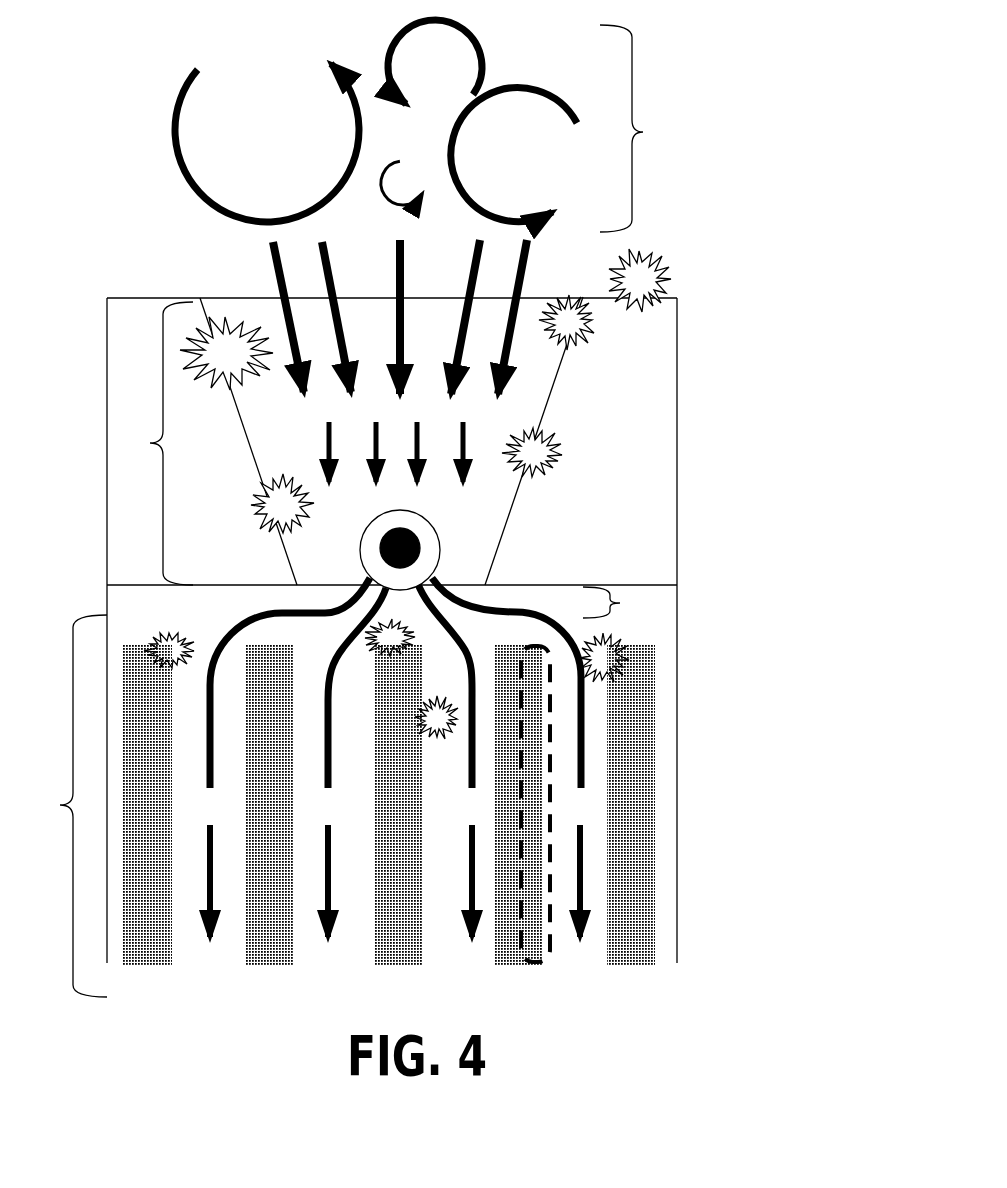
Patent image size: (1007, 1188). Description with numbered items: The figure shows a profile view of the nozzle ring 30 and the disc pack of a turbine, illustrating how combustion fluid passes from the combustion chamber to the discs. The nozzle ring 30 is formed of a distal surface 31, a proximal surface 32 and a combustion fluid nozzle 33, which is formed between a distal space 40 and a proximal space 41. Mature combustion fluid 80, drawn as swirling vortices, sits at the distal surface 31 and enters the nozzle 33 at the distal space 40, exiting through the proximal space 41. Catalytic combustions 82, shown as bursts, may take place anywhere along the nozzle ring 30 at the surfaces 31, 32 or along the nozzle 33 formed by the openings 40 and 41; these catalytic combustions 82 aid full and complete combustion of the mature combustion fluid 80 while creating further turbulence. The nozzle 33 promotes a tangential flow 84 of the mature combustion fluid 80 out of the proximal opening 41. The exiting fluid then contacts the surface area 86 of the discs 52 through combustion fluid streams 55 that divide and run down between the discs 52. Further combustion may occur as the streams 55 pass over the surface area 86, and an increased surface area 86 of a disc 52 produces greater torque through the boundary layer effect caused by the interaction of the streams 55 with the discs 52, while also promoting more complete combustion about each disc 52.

The nozzle ring 30 is at (100, 367).
The distal surface 31 is at (120, 291).
The proximal surface 32 is at (126, 582).
The combustion fluid nozzle 33 is at (322, 412).
The distal space 40 is at (243, 292).
The proximal space 41 is at (462, 571).
The disc 52 is at (337, 806).
The combustion fluid stream 55 is at (394, 757).
The mature combustion fluid 80 is at (427, 126).
The catalytic combustion 82 is at (597, 350).
The tangential flow 84 is at (623, 602).
The surface area 86 is at (556, 752).